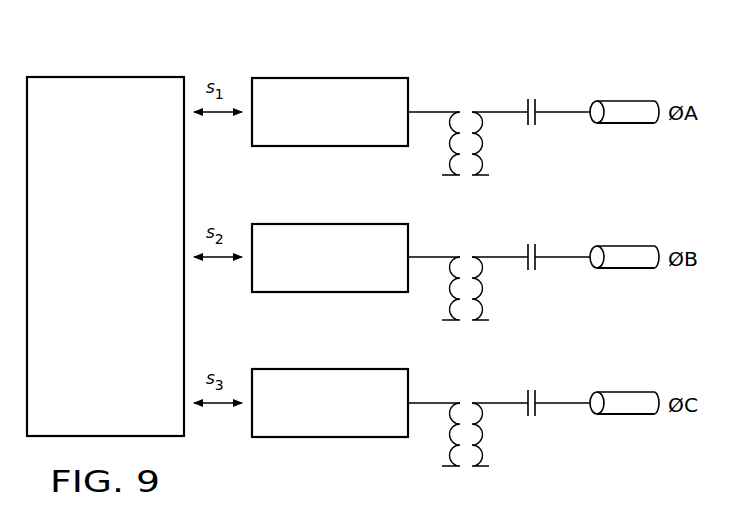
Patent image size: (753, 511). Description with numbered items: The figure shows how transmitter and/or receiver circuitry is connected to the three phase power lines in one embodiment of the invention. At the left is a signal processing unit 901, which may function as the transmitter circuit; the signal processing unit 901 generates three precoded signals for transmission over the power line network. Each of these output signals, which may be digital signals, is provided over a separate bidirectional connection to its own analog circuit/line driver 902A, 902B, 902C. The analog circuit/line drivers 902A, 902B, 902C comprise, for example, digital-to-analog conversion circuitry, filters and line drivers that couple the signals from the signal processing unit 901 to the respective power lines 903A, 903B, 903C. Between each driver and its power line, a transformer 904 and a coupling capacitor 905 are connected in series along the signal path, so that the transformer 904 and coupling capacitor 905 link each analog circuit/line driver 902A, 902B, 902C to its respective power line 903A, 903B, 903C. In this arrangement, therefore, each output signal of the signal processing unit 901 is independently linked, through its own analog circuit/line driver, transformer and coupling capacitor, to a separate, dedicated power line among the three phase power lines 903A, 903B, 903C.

The signal processing unit 901 is at (84, 320).
The analog circuit/line driver 902A is at (330, 78).
The analog circuit/line driver 902B is at (330, 224).
The analog circuit/line driver 902C is at (330, 437).
The power line 903A is at (625, 101).
The power line 903B is at (625, 246).
The power line 903C is at (627, 414).
The transformer 904 is at (467, 108).
The coupling capacitor 905 is at (530, 96).